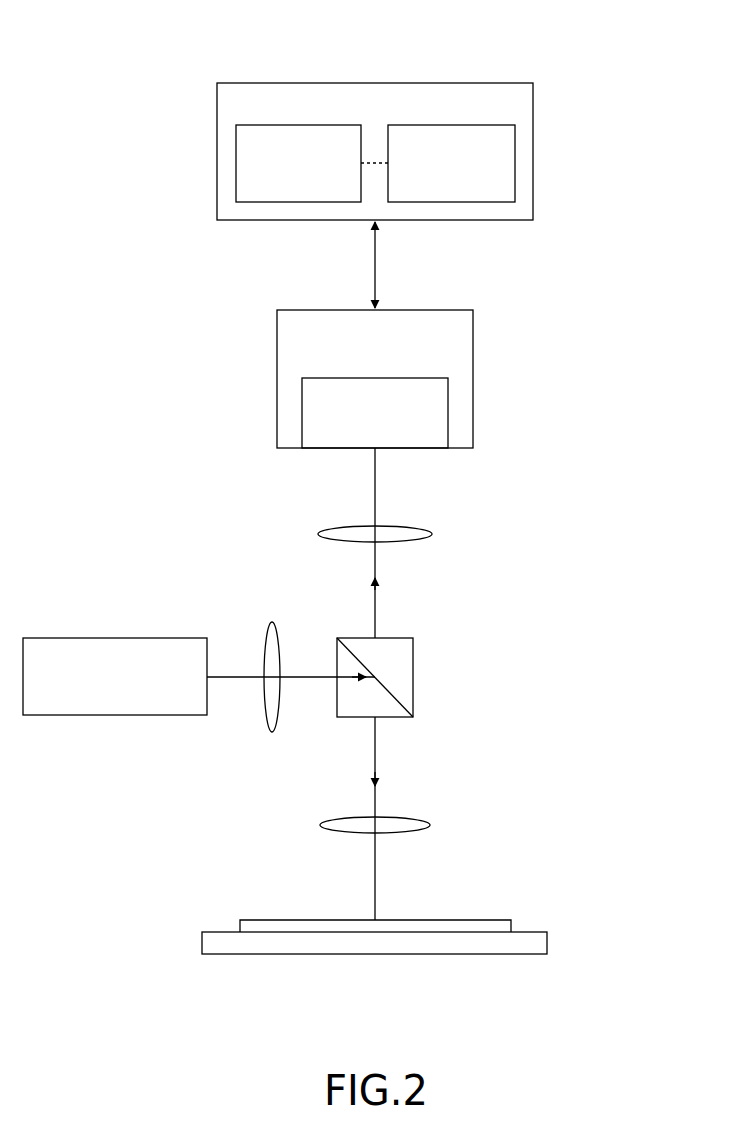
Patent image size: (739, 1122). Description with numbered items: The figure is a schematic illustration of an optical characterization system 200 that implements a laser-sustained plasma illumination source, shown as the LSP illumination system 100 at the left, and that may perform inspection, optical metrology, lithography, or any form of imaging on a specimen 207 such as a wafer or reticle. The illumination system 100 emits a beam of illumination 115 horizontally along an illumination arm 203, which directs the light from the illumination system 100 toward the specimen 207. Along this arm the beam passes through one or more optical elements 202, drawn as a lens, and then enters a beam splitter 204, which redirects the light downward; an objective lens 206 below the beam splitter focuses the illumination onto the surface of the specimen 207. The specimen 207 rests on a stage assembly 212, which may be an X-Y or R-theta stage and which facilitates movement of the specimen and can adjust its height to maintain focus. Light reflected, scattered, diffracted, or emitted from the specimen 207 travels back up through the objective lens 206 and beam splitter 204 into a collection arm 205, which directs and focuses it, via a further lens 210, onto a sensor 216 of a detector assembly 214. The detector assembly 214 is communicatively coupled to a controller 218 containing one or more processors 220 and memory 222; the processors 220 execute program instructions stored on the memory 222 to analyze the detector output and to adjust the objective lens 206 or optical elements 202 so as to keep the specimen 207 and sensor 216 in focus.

The optical characterization system 200 is at (170, 38).
The LSP illumination system 100 is at (97, 683).
The beam of illumination 115 is at (237, 677).
The optical elements 202 is at (271, 730).
The illumination arm 203 is at (250, 527).
The beam splitter 204 is at (413, 674).
The collection arm 205 is at (462, 607).
The objective lens 206 is at (420, 818).
The specimen 207 is at (511, 931).
The imaging lens 210 is at (420, 528).
The stage assembly 212 is at (547, 940).
The detector assembly 214 is at (357, 356).
The sensor 216 is at (357, 425).
The controller 218 is at (357, 115).
The processors 220 is at (280, 171).
The memory 222 is at (434, 171).